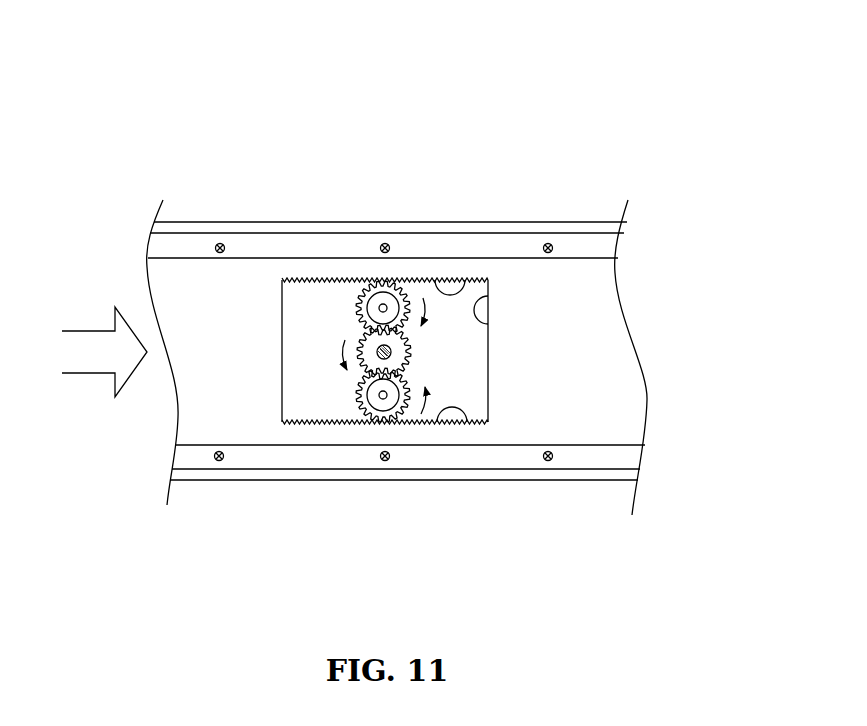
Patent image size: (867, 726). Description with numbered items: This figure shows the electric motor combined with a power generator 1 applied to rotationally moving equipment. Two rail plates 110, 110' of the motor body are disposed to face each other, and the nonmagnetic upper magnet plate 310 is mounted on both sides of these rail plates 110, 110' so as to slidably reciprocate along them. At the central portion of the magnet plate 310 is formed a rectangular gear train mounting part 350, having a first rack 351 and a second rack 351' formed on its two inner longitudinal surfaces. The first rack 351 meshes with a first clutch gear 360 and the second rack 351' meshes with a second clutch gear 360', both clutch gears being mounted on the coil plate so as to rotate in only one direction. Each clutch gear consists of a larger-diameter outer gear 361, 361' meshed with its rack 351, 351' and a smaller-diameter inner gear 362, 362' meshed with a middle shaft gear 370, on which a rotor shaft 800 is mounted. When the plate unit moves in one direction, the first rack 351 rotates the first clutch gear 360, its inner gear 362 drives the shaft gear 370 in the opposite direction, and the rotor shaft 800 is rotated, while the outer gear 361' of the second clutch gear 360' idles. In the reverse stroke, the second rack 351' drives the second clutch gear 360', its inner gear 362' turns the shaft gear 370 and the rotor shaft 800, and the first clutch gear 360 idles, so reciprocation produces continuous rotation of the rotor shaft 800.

The apparatus 1 is at (312, 140).
The rail plate 110 is at (384, 175).
The rail plate 110' is at (407, 527).
The upper magnet plate 310 is at (583, 293).
The gear train mounting part 350 is at (450, 215).
The first rack 351 is at (470, 215).
The second rack 351' is at (470, 493).
The first clutch gear 360 is at (332, 242).
The second clutch gear 360' is at (333, 459).
The outer gear 361 is at (385, 217).
The outer gear 361' is at (385, 481).
The inner gear 362 is at (371, 230).
The inner gear 362' is at (367, 470).
The shaft gear 370 is at (402, 350).
The rotor shaft 800 is at (378, 348).